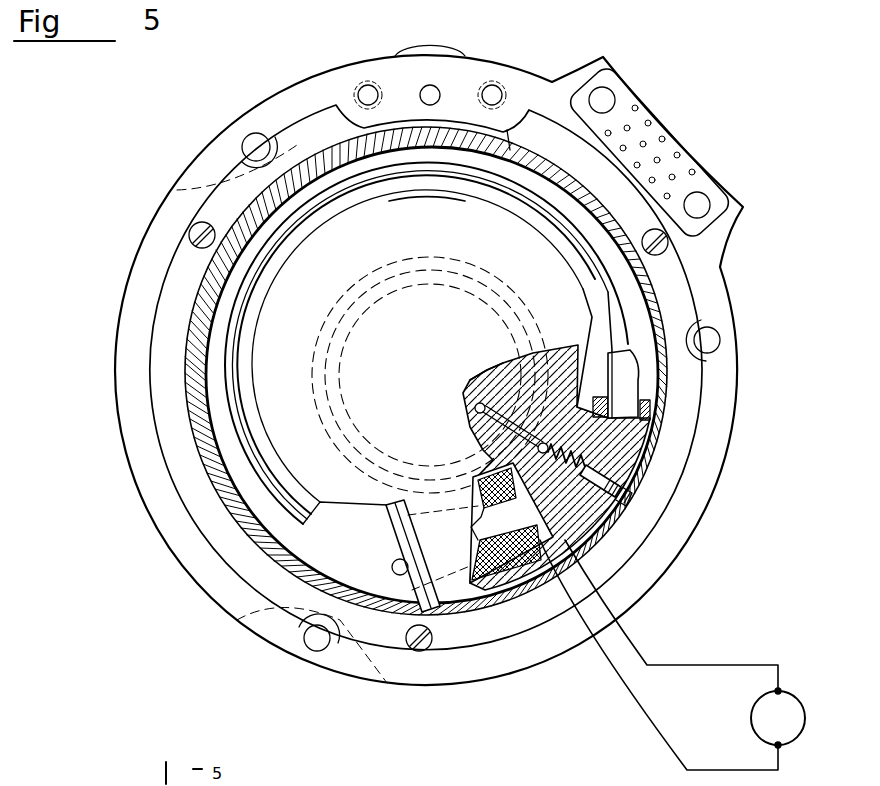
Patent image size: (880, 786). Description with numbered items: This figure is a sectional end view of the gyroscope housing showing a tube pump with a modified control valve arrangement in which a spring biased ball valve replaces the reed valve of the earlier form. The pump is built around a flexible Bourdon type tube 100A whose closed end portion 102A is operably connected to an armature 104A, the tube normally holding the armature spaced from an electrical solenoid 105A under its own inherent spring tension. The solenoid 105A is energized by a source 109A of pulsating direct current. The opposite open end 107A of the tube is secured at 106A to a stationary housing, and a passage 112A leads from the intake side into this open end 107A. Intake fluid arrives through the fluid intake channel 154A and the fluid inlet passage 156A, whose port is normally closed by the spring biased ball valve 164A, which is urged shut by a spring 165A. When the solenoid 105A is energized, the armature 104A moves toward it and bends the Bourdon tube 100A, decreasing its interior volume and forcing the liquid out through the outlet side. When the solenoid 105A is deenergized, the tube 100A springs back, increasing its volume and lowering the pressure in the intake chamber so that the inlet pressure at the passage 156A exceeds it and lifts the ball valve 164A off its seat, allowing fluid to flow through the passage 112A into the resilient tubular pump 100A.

The Bourdon type tube 100A is at (223, 360).
The closed end portion 102A is at (415, 560).
The armature 104A is at (500, 590).
The solenoid 105A is at (500, 575).
The securing point 106A is at (620, 405).
The open end 107A is at (628, 392).
The source of pulsating direct current 109A is at (803, 706).
The passage 112A is at (530, 520).
The fluid intake channel 154A is at (474, 410).
The fluid inlet passage 156A is at (497, 400).
The spring biased ball valve 164A is at (643, 590).
The spring 165A is at (590, 476).